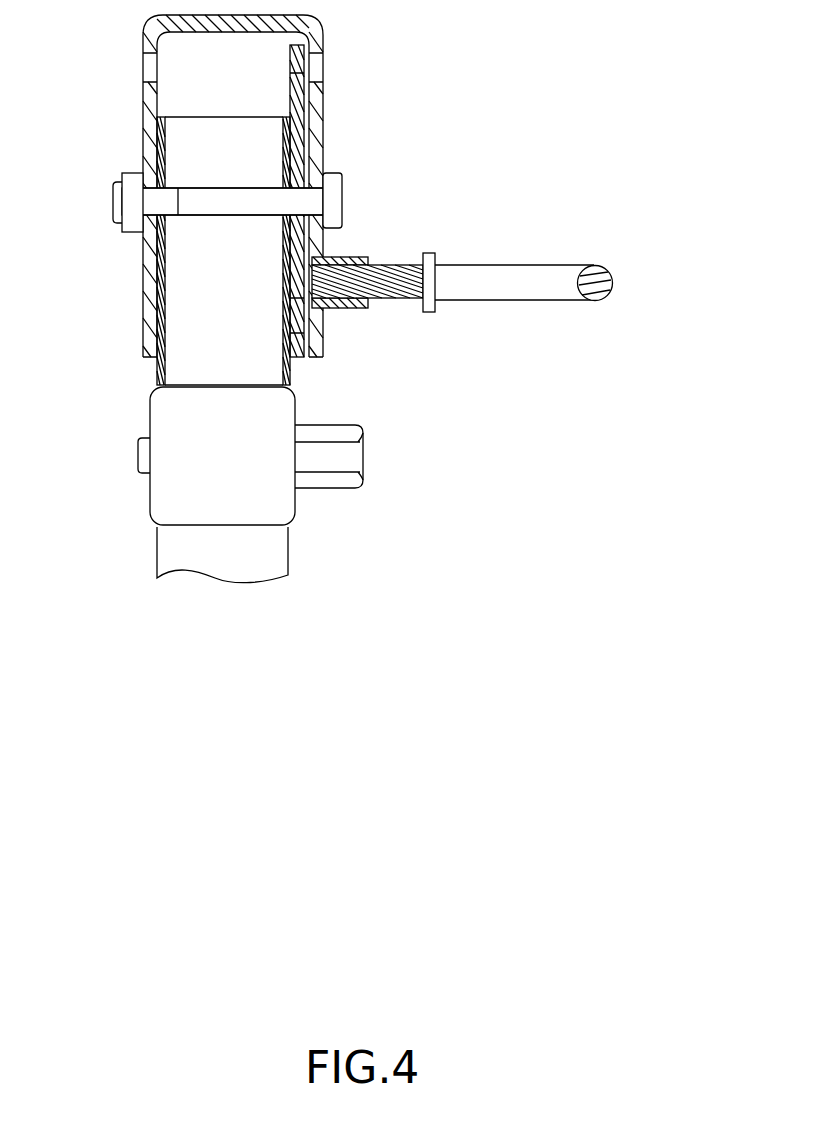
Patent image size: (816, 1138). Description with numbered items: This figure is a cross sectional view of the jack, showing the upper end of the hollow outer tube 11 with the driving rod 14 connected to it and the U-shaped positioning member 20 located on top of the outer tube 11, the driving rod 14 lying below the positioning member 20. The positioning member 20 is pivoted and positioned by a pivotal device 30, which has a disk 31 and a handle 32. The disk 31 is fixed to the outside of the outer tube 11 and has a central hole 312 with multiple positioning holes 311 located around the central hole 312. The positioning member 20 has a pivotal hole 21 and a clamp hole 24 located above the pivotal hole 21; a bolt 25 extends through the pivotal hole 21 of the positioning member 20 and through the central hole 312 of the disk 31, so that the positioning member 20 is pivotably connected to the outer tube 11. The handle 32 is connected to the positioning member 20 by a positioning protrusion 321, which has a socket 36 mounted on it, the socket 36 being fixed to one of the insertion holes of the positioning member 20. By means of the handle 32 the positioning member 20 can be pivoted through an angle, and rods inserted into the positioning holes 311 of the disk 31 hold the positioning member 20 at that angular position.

The outer tube 11 is at (280, 563).
The driving rod 14 is at (355, 455).
The positioning member 20 is at (143, 102).
The pivotal hole 21 is at (316, 184).
The clamp hole 24 is at (323, 70).
The bolt 25 is at (152, 201).
The pivotal device 30 is at (486, 198).
The disk 31 is at (300, 127).
The positioning holes 311 is at (322, 357).
The central hole 312 is at (325, 236).
The handle 32 is at (613, 283).
The positioning protrusion 321 is at (420, 252).
The socket 36 is at (368, 308).